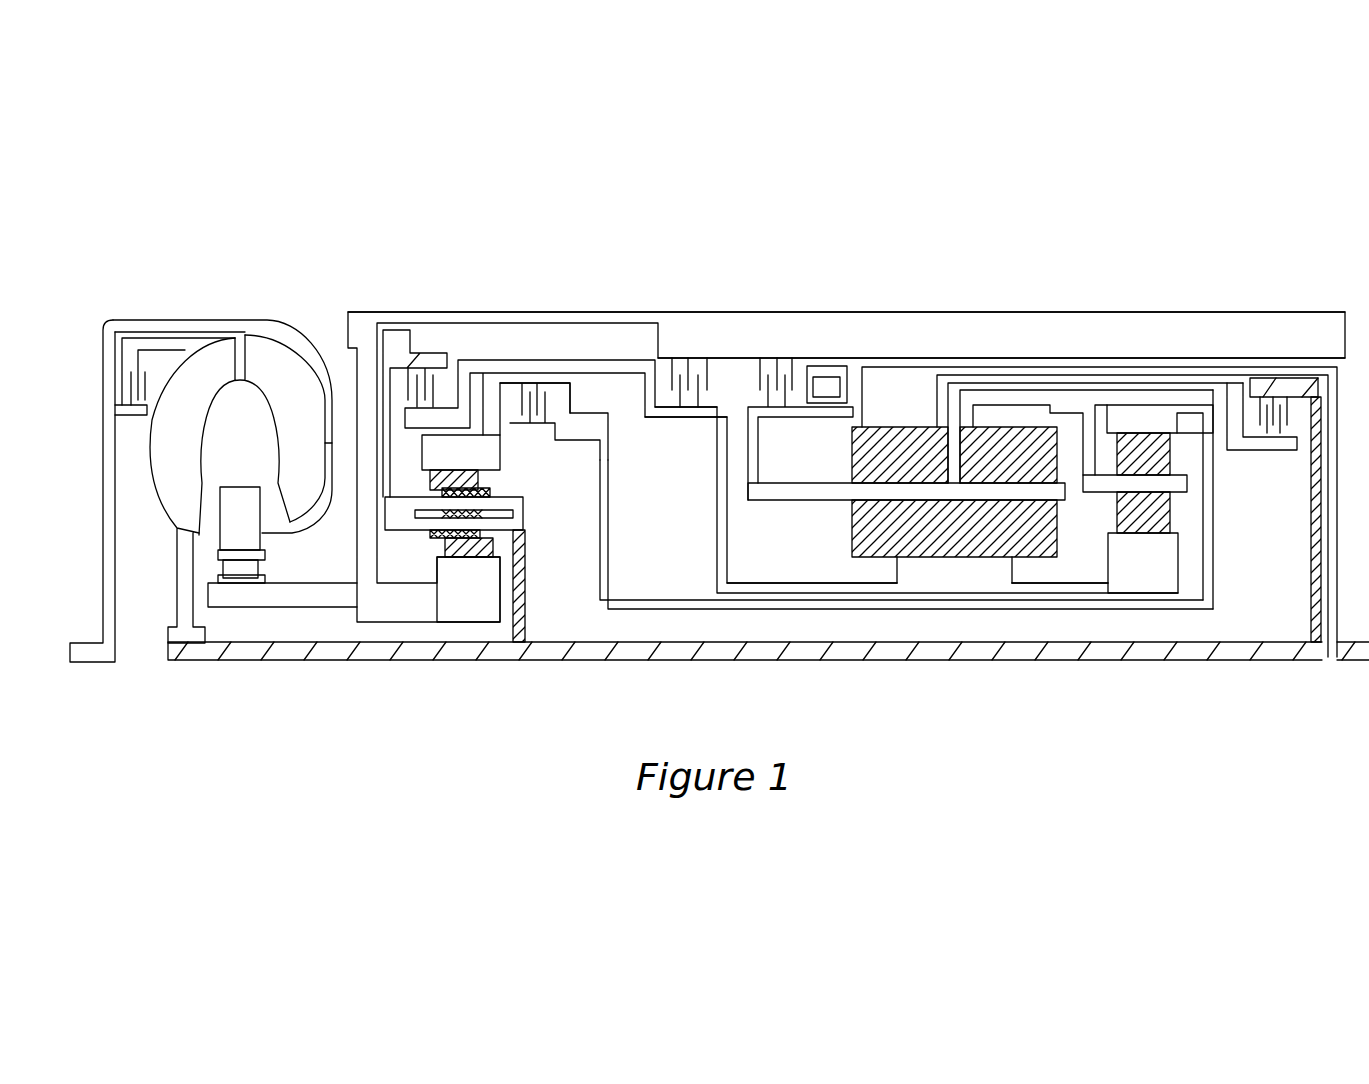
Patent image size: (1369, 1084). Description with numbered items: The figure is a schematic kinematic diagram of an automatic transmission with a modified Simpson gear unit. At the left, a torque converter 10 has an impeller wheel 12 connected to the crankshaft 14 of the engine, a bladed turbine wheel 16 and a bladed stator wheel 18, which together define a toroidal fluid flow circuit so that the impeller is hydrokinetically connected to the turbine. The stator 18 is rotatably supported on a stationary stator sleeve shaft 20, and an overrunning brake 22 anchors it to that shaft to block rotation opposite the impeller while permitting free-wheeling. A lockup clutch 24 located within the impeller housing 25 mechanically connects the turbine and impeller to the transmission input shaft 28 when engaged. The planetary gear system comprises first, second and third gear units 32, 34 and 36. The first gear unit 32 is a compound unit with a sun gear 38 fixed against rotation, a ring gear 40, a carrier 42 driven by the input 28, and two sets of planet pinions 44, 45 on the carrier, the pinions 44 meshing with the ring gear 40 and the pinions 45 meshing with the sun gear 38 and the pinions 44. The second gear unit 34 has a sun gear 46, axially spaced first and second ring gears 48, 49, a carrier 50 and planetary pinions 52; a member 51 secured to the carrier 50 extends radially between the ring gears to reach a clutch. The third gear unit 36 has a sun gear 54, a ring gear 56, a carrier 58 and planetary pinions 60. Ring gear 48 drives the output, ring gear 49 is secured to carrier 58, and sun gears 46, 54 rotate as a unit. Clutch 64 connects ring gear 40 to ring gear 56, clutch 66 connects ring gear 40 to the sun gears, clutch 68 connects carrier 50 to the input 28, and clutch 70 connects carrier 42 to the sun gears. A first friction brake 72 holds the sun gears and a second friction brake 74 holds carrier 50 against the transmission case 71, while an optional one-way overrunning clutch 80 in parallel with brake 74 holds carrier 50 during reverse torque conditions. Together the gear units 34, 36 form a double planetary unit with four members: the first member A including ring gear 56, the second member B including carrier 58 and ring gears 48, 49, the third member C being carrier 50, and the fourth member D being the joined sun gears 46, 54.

The torque converter 10 is at (297, 318).
The impeller wheel 12 is at (313, 456).
The crankshaft 14 is at (97, 663).
The bladed turbine wheel 16 is at (193, 456).
The bladed stator wheel 18 is at (250, 480).
The stationary stator sleeve shaft 20 is at (317, 583).
The overrunning brake 22 is at (263, 563).
The lockup clutch 24 is at (130, 387).
The torque converter impeller housing 25 is at (205, 320).
The transmission input shaft 28 is at (277, 642).
The first gear unit 32 is at (416, 541).
The second gear unit 34 is at (838, 520).
The third gear unit 36 is at (1178, 520).
The sun gear 38 is at (468, 568).
The ring gear 40 is at (422, 452).
The carrier 42 is at (380, 462).
The planet pinions 44 is at (482, 474).
The planet pinions 45 is at (440, 547).
The sun gear 46 is at (1013, 567).
The first ring gear 48 is at (860, 410).
The second ring gear 49 is at (1008, 405).
The carrier 50 is at (783, 482).
The member 51 is at (963, 397).
The planetary pinions 52 is at (1057, 518).
The sun gear 54 is at (1142, 567).
The ring gear 56 is at (1130, 403).
The carrier 58 is at (1187, 482).
The planetary pinions 60 is at (1170, 495).
The clutch 64 is at (540, 397).
The clutch 66 is at (565, 397).
The clutch 68 is at (1280, 417).
The clutch 70 is at (423, 383).
The transmission case 71 is at (513, 312).
The first friction brake 72 is at (690, 380).
The second friction brake 74 is at (777, 377).
The one-way overrunning clutch 80 is at (835, 398).
The first member A is at (1088, 607).
The second member B is at (1173, 365).
The third member C is at (802, 502).
The fourth member D is at (820, 593).